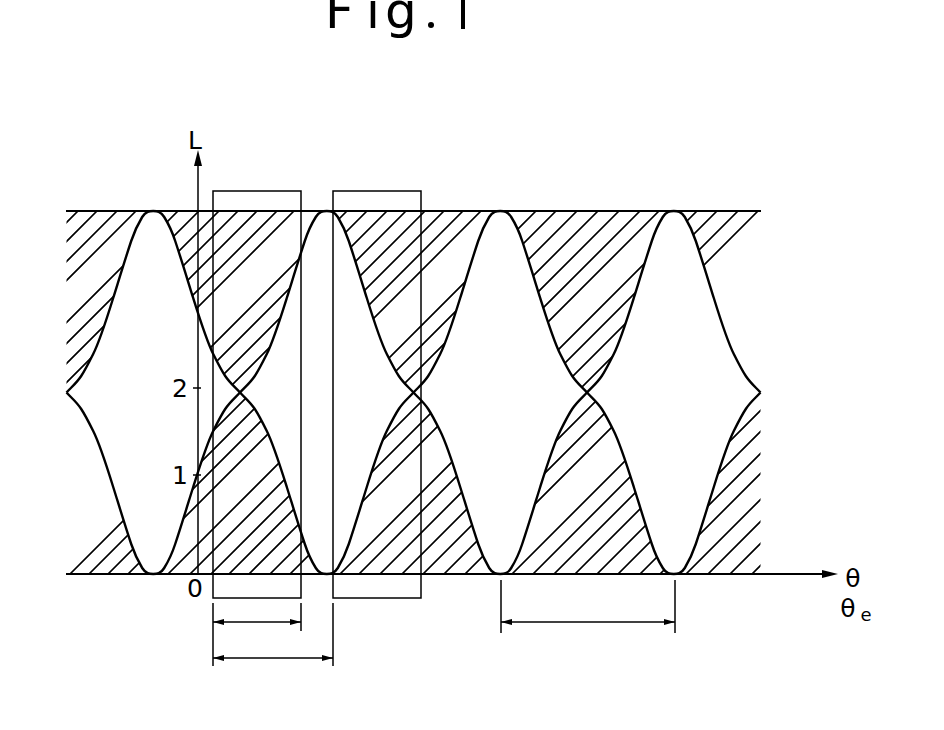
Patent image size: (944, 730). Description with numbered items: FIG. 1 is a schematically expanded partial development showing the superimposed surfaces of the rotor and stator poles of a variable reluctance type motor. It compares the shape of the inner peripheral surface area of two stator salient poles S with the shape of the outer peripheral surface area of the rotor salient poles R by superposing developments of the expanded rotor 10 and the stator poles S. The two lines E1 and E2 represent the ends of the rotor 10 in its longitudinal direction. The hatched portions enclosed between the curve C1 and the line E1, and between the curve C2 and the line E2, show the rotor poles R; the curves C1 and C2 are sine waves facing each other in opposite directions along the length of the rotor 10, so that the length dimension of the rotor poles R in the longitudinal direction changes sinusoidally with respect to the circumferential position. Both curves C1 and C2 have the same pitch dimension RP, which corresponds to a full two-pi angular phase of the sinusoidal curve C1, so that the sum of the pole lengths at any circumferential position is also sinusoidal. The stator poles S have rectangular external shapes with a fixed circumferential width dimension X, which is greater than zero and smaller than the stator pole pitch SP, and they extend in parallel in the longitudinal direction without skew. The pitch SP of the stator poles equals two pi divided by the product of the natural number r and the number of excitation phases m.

The rotor 10 is at (530, 200).
The line representing an end of the rotor E1 is at (100, 576).
The line representing an end of the rotor E2 is at (630, 210).
The stator salient pole S is at (277, 191).
The sine wave curve C1 is at (455, 459).
The sine wave curve C2 is at (456, 317).
The rotor salient pole R is at (456, 556).
The width dimension of the stator poles X is at (257, 634).
The pitch of arrangement of the stator poles SP is at (273, 645).
The pitch dimension of the sinusoidal curves RP is at (588, 617).